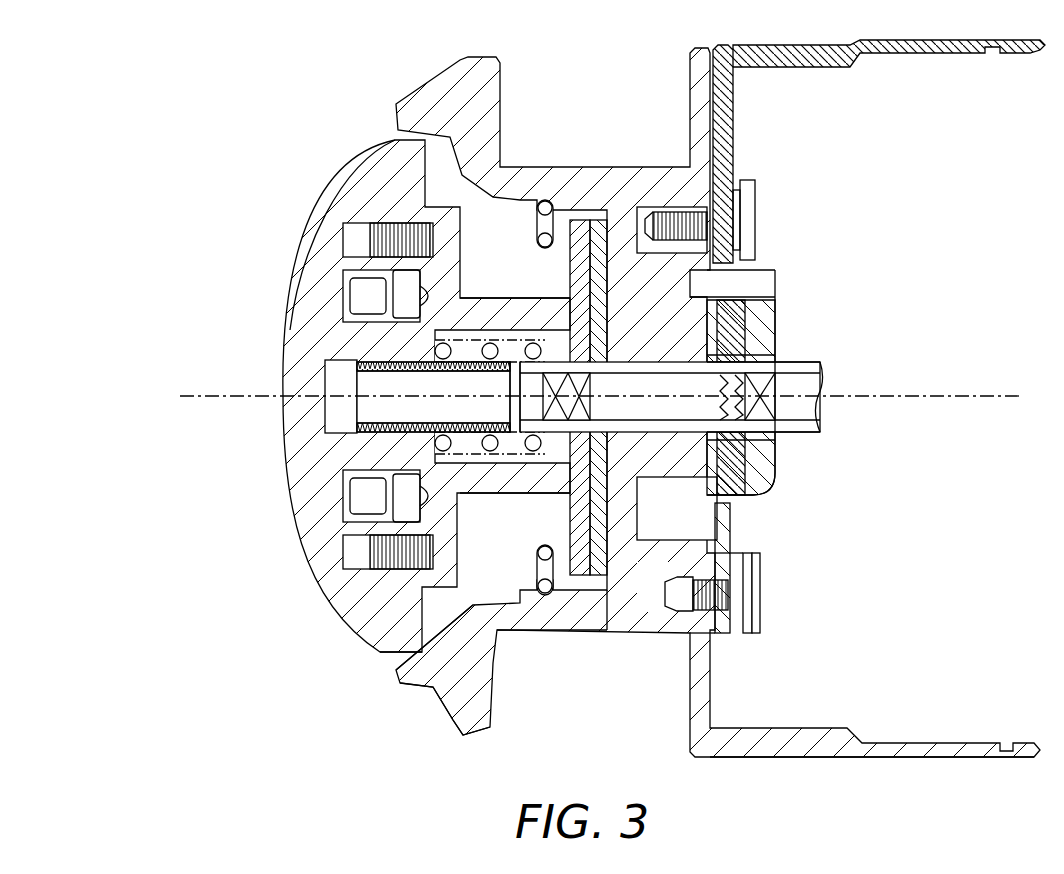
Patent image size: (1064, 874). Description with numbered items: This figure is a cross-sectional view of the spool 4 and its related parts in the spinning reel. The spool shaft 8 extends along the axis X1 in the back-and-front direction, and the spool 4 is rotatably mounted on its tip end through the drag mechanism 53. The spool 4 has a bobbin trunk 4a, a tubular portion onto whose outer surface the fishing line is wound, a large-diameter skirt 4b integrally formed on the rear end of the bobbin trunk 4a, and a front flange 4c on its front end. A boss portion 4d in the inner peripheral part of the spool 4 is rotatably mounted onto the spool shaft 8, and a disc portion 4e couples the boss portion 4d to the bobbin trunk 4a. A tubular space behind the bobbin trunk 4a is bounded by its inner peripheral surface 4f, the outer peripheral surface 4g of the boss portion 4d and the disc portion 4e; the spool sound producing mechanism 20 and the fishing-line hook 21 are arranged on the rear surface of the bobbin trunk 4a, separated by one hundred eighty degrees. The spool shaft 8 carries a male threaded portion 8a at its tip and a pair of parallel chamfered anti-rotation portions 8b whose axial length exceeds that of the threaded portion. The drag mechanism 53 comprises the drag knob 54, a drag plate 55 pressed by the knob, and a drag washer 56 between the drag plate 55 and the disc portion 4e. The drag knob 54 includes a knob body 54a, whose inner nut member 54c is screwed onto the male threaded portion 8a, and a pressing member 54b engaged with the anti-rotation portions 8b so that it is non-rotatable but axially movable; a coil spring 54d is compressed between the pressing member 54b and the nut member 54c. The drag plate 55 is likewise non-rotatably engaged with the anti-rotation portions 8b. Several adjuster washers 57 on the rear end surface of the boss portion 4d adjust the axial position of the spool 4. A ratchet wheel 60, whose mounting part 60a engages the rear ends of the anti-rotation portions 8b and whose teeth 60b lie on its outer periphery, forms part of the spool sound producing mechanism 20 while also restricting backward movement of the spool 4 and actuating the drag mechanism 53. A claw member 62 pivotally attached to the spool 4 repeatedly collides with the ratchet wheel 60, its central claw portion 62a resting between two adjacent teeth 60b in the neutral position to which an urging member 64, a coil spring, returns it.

The spool 4 is at (592, 645).
The bobbin trunk 4a is at (668, 628).
The skirt 4b is at (890, 743).
The front flange 4c is at (447, 693).
The boss portion 4d is at (745, 483).
The disc portion 4e is at (640, 600).
The inner peripheral surface 4f is at (687, 633).
The outer peripheral surface 4g is at (735, 502).
The spool shaft 8 is at (805, 355).
The male threaded portion 8a is at (440, 318).
The anti-rotation portions 8b is at (420, 402).
The spool sound producing mechanism 20 is at (770, 556).
The fishing-line hook 21 is at (733, 140).
The drag mechanism 53 is at (368, 660).
The drag knob 54 is at (305, 205).
The knob body 54a is at (360, 185).
The pressing member 54b is at (498, 303).
The nut member 54c is at (353, 463).
The coil spring 54d is at (410, 313).
The drag plate 55 is at (580, 217).
The drag washer 56 is at (602, 220).
The adjuster washers 57 is at (757, 320).
The ratchet wheel 60 is at (790, 457).
The mounting part 60a is at (790, 425).
The teeth 60b is at (748, 530).
The claw member 62 is at (723, 640).
The claw portion 62a is at (775, 545).
The urging member 64 is at (742, 633).
The axis X1 is at (855, 385).